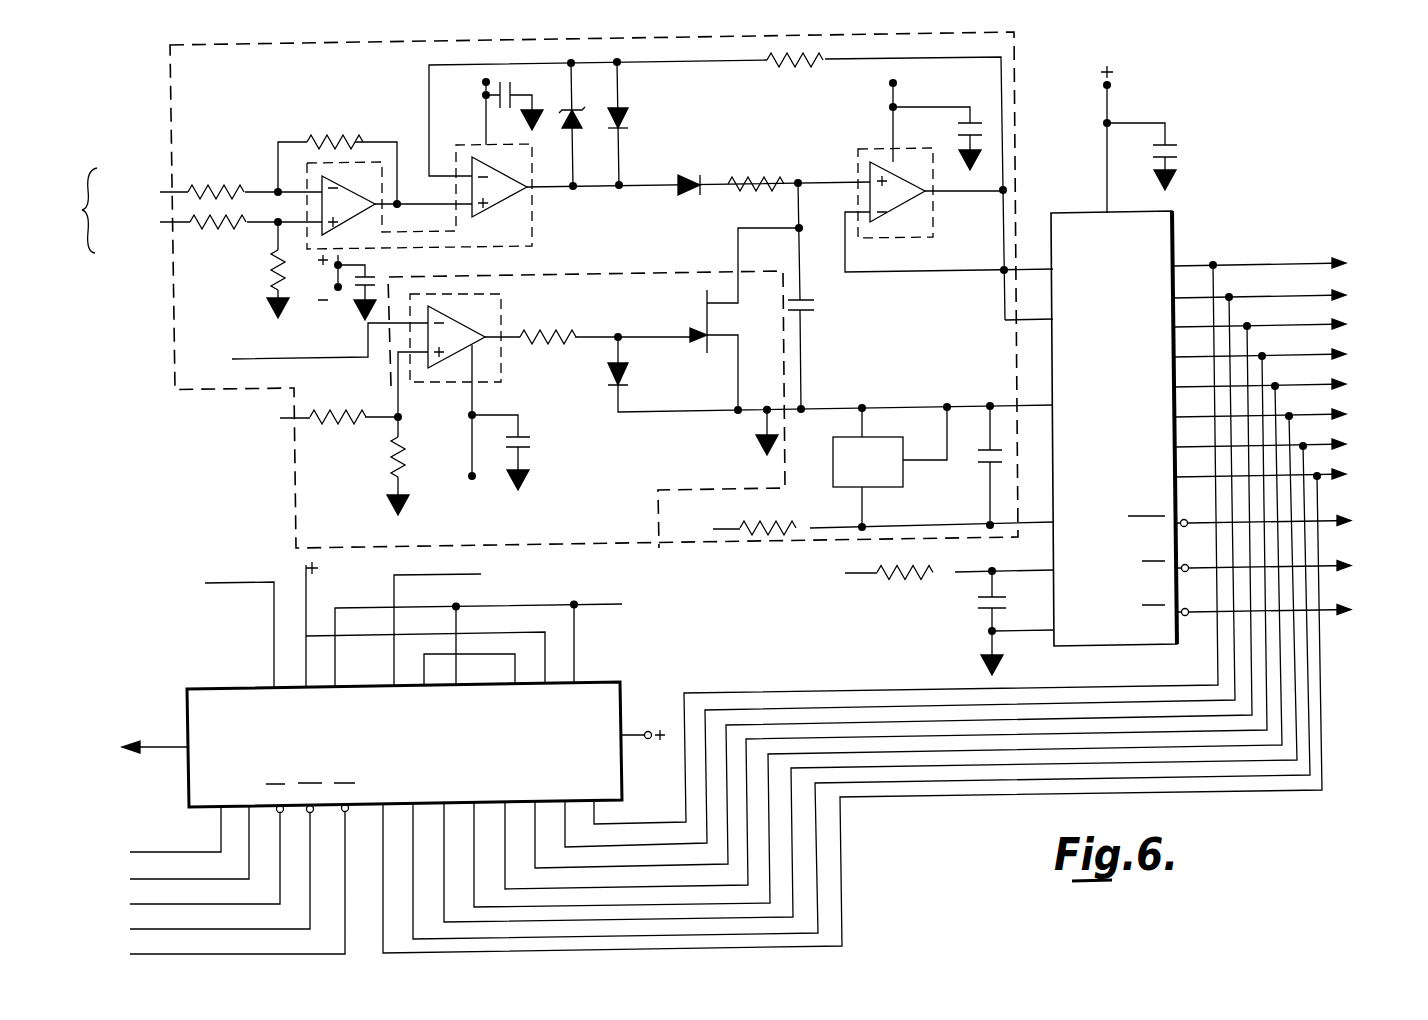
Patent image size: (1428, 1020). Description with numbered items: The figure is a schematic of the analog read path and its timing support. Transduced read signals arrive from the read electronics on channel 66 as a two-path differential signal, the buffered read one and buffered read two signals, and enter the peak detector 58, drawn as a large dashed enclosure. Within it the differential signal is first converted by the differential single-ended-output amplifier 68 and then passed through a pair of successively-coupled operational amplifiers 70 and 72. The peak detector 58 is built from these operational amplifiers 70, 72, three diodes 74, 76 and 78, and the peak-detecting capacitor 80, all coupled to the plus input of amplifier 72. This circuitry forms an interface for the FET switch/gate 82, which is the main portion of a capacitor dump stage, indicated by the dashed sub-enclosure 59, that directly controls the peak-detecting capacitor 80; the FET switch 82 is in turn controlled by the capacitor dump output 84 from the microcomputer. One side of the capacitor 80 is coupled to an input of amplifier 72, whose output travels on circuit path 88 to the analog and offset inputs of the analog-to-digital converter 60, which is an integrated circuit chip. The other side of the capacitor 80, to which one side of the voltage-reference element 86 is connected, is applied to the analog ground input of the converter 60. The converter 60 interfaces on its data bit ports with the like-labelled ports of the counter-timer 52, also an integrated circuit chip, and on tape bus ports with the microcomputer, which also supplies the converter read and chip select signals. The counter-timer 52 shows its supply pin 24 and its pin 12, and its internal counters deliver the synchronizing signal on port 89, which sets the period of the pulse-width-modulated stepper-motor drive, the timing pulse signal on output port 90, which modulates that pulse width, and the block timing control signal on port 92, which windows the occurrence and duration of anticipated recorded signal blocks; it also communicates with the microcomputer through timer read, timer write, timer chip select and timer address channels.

The counter-timer 52 is at (726, 610).
The peak detector 58 is at (1028, 138).
The integrator and dump circuit 59 is at (316, 477).
The analog-to-digital converter 60 is at (1183, 209).
The channel 66 is at (92, 252).
The differential single-ended-output amplifier 68 is at (358, 212).
The operational amplifier 70 is at (506, 196).
The operational amplifier 72 is at (912, 200).
The diode 74 is at (567, 128).
The diode 76 is at (614, 124).
The diode 78 is at (694, 172).
The peak-detecting capacitor 80 is at (822, 291).
The FET switch/gate 82 is at (705, 300).
The output 84 is at (240, 359).
The voltage-reference element 86 is at (870, 471).
The circuit path 88 is at (1003, 292).
The port 89 is at (598, 607).
The output port 90 is at (481, 574).
The port 92 is at (246, 584).
The ground pin 12 is at (155, 753).
The VCC pin 24 is at (643, 725).